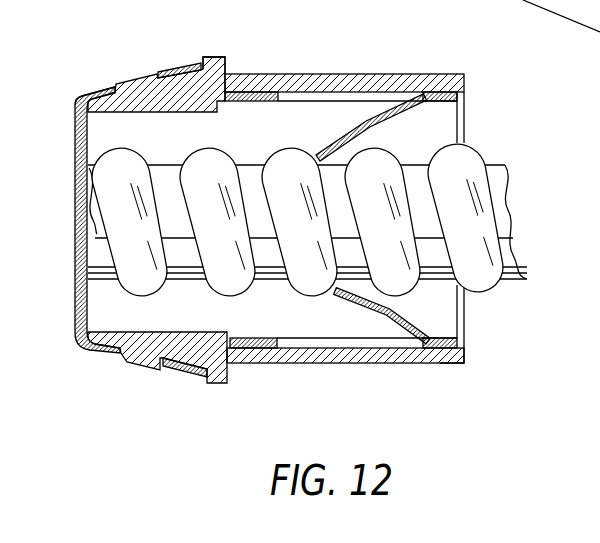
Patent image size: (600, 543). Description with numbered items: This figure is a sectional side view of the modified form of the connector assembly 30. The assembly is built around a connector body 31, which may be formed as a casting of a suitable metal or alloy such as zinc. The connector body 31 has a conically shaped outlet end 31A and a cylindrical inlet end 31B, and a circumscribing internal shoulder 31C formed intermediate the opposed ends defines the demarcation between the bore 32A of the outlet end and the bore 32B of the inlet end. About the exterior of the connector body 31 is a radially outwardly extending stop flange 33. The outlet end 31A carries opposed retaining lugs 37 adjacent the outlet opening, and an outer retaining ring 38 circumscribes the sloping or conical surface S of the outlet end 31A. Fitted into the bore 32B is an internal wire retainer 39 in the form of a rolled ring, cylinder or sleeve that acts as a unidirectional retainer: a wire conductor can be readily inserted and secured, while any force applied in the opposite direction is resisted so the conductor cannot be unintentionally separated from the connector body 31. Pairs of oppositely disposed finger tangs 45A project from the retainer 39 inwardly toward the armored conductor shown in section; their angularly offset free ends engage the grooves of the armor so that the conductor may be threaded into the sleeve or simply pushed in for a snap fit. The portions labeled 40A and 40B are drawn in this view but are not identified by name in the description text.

The connector assembly 30 is at (292, 231).
The coupling ring 31 is at (412, 355).
The annular ridge of coupling ring 31A is at (177, 96).
The rear end of coupling ring 31B is at (458, 364).
The inner lip of coupling ring 31C is at (218, 112).
The upper housing body portion 32A is at (127, 118).
The lower housing body portion 32B is at (315, 334).
The shoulder 33 is at (213, 57).
The lower annular ridge 37 is at (147, 352).
The outer shell 38 is at (70, 321).
The locking tab seat 39 is at (445, 326).
The inner sleeve lower portion 40A is at (236, 347).
The inner sleeve upper portion 40B is at (468, 96).
The spring finger 45A is at (363, 125).
The seam S is at (110, 94).